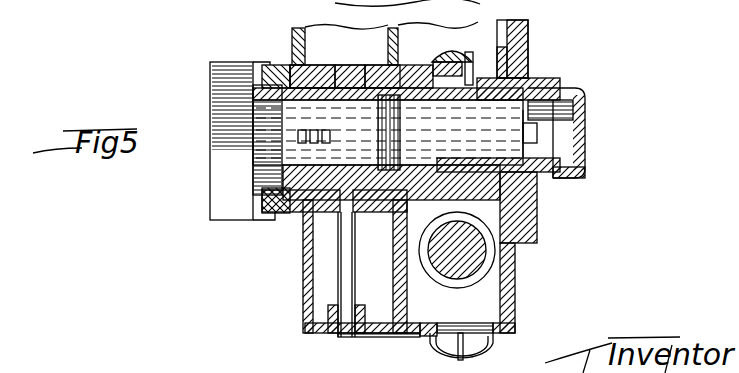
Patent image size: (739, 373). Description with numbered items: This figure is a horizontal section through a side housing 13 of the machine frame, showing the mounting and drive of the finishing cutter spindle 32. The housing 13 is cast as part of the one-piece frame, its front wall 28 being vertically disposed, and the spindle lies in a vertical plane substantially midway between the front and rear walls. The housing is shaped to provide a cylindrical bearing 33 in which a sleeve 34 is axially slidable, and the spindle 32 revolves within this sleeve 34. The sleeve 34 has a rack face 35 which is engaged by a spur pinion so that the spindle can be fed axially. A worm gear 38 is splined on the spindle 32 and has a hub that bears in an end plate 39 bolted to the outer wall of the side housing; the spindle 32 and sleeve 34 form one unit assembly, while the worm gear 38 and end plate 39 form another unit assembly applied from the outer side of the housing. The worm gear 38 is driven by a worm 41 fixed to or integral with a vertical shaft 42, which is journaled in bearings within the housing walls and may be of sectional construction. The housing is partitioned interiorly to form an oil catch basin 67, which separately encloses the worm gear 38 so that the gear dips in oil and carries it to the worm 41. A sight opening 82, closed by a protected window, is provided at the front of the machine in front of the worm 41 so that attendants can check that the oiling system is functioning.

The side housing 13 is at (304, 251).
The front wall 28 is at (420, 333).
The finishing cutter spindle 32 is at (255, 150).
The cylindrical bearing 33 is at (390, 64).
The sleeve 34 is at (332, 88).
The rack face 35 is at (341, 65).
The worm gear 38 is at (466, 46).
The end plate 39 is at (528, 36).
The worm 41 is at (490, 250).
The vertical shaft 42 is at (478, 265).
The oil catch basin 67 is at (496, 290).
The sight opening 82 is at (469, 324).